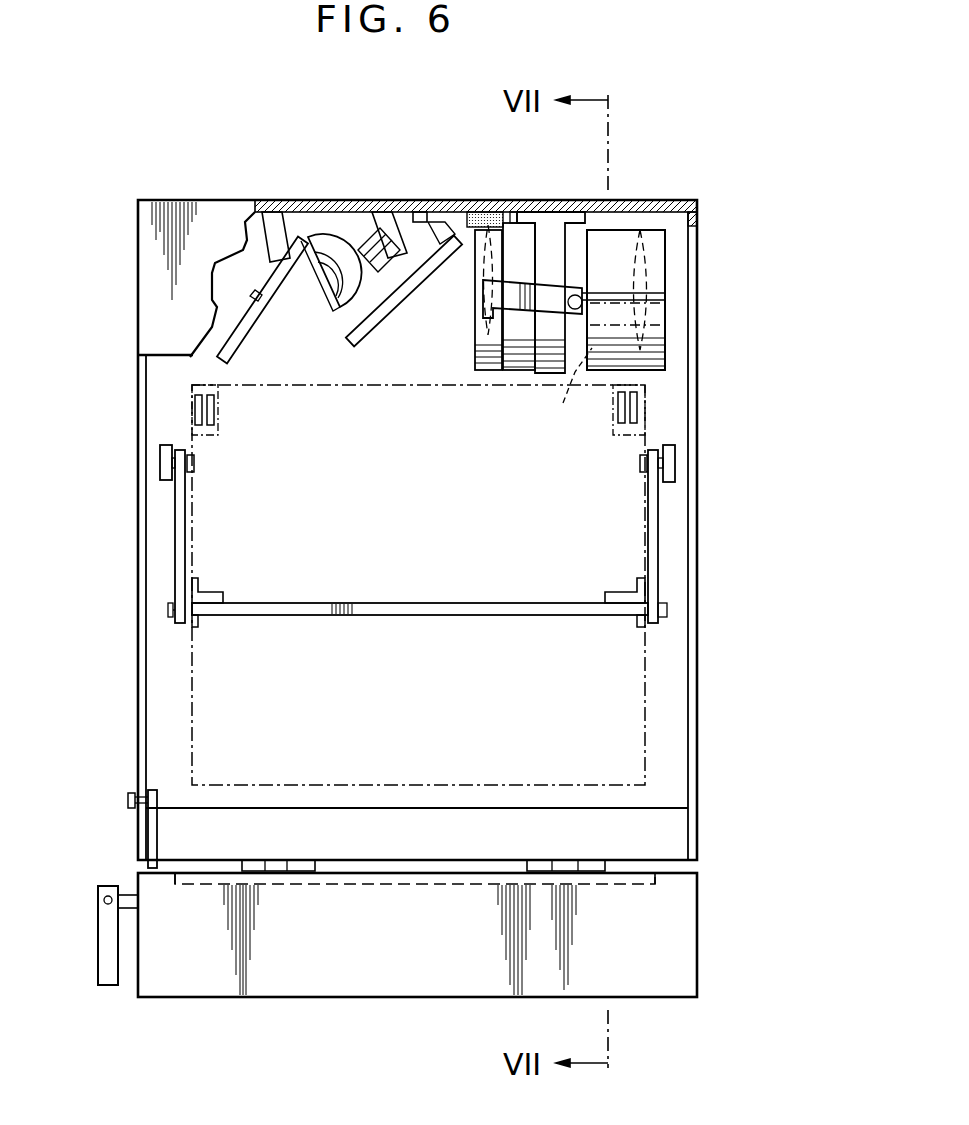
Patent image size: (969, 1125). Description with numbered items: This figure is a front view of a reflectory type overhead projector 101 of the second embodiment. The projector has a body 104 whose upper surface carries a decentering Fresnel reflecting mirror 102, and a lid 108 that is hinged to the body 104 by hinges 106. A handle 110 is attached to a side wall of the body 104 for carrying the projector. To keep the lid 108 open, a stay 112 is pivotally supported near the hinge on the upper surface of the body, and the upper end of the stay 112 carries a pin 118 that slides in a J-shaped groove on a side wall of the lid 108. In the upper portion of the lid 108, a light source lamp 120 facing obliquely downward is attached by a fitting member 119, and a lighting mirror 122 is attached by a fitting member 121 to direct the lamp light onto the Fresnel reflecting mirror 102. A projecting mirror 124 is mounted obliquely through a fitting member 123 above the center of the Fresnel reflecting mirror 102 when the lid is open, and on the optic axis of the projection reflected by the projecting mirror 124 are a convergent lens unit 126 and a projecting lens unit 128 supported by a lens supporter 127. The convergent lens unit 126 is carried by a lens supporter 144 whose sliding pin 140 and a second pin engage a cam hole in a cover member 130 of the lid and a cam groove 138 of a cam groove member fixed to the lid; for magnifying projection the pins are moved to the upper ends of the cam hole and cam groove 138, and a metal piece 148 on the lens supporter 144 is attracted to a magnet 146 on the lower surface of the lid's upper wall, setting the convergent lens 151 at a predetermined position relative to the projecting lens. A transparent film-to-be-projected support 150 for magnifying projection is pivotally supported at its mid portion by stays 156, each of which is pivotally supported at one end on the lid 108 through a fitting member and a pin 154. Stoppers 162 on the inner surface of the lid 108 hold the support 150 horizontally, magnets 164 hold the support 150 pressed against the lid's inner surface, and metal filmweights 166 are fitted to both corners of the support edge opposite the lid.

The overhead projector 101 is at (134, 570).
The decentering Fresnel reflecting mirror 102 is at (470, 882).
The body 104 is at (422, 1004).
The hinges 106 is at (290, 860).
The lid 108 is at (189, 190).
The handle 110 is at (98, 950).
The stay 112 is at (152, 836).
The pin 118 is at (128, 800).
The fitting member 119 is at (398, 211).
The light source lamp 120 is at (341, 240).
The fitting member 121 is at (276, 208).
The lighting mirror 122 is at (230, 350).
The fitting member 123 is at (437, 211).
The projecting mirror 124 is at (358, 334).
The convergent lens unit 126 is at (466, 318).
The lens supporter 127 is at (554, 210).
The projecting lens unit 128 is at (644, 222).
The cover member 130 is at (155, 259).
The cam groove 138 is at (559, 388).
The sliding pin 140 is at (665, 297).
The lens supporter 144 is at (473, 292).
The magnet 146 is at (485, 210).
The metal piece 148 is at (501, 226).
The film-to-be-projected support 150 is at (390, 603).
The convergent lens 151 is at (482, 343).
The pin 154 is at (196, 462).
The stays 156 is at (185, 540).
The stoppers 162 is at (199, 626).
The magnets 164 is at (194, 415).
The metal filmweights 166 is at (213, 592).